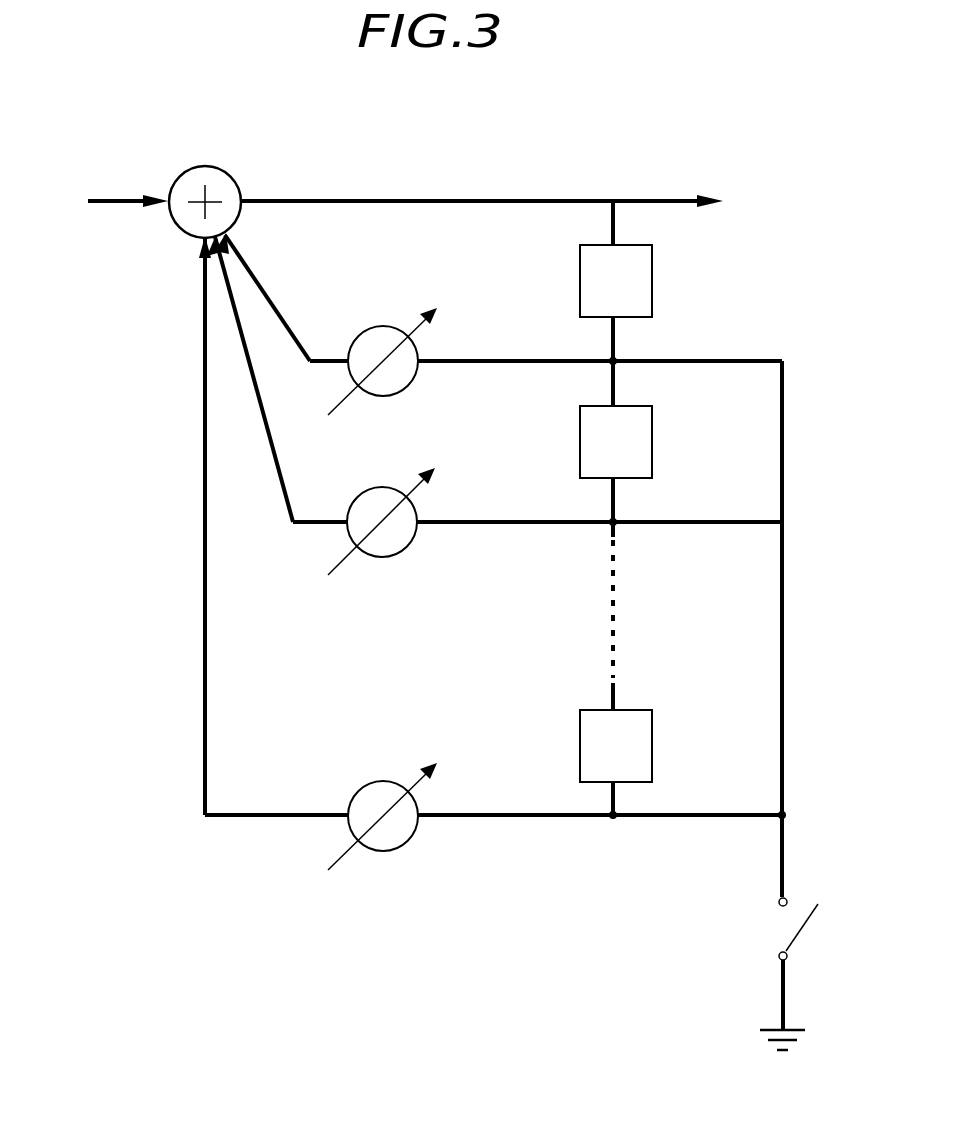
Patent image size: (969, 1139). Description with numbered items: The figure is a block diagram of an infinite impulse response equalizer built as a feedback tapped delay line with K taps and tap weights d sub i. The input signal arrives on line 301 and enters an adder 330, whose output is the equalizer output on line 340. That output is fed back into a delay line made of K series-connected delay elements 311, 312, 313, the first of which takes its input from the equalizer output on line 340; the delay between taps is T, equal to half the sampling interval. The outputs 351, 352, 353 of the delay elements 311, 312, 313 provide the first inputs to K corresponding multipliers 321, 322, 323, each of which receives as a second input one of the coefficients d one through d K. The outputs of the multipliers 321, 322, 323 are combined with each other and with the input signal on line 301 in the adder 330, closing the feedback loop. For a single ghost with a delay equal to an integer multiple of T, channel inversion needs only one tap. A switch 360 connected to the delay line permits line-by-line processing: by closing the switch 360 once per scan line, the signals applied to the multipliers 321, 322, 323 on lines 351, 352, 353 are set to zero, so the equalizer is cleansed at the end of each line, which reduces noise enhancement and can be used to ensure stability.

The input line 301 is at (113, 205).
The adder 330 is at (232, 178).
The equalizer output line 340 is at (643, 199).
The delay element 311 is at (650, 282).
The delay element 312 is at (650, 440).
The delay element 313 is at (650, 745).
The multiplier 321 is at (382, 327).
The multiplier 322 is at (382, 487).
The multiplier 323 is at (383, 781).
The delay element output line 351 is at (481, 360).
The delay element output line 352 is at (482, 521).
The delay element output line 353 is at (482, 815).
The switch 360 is at (800, 931).